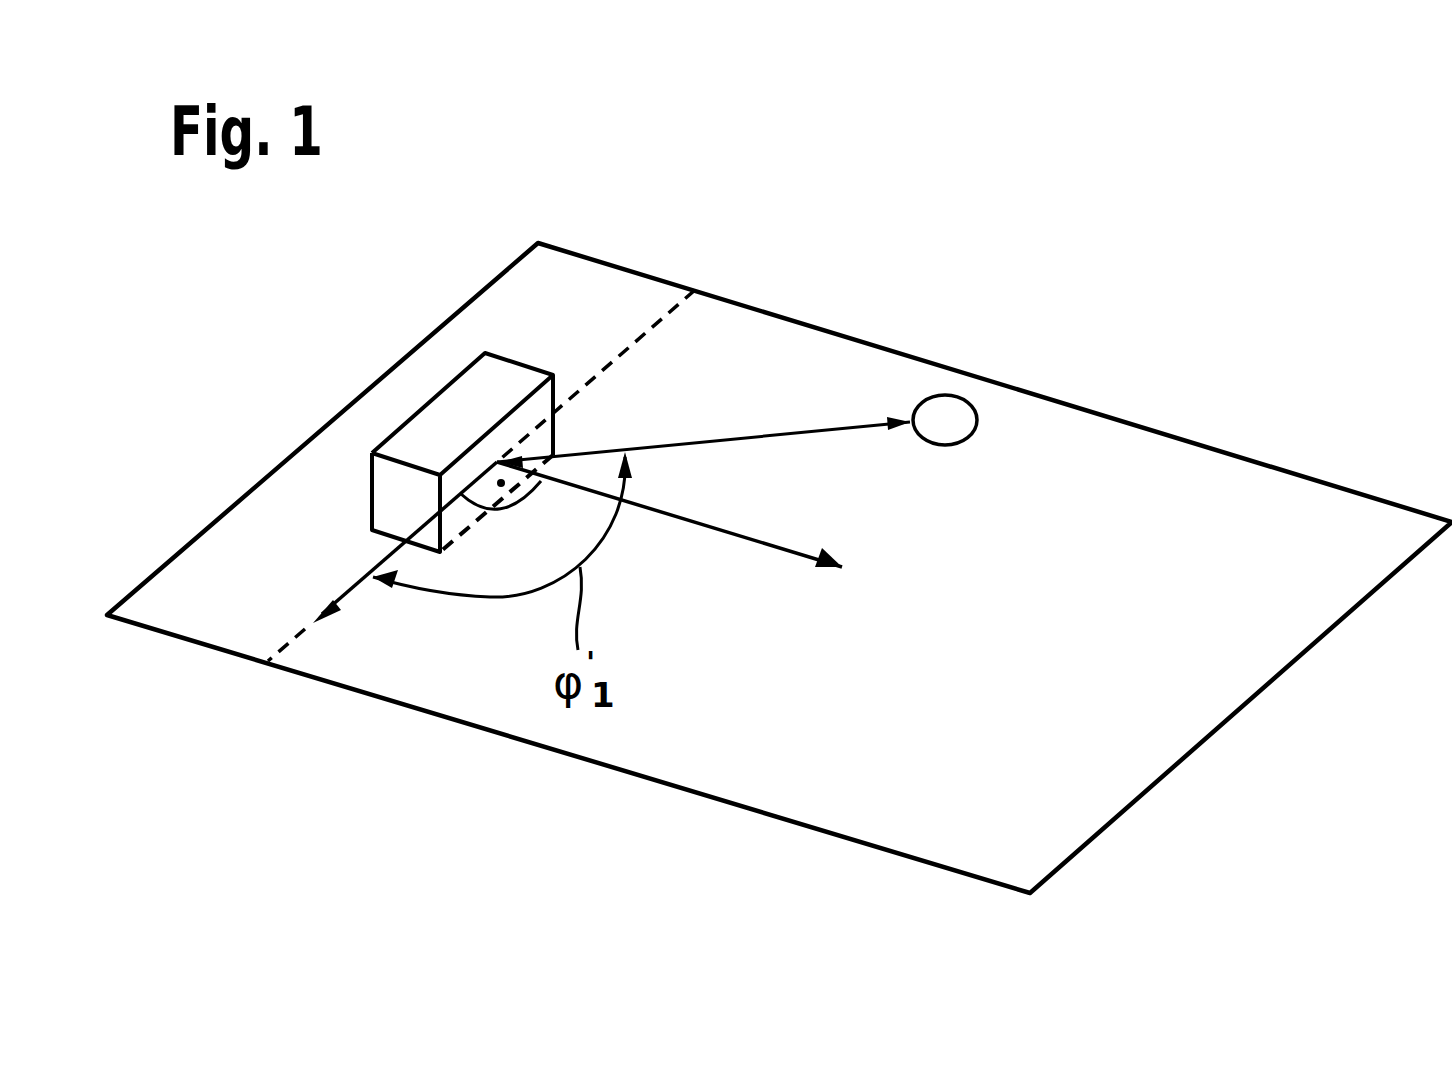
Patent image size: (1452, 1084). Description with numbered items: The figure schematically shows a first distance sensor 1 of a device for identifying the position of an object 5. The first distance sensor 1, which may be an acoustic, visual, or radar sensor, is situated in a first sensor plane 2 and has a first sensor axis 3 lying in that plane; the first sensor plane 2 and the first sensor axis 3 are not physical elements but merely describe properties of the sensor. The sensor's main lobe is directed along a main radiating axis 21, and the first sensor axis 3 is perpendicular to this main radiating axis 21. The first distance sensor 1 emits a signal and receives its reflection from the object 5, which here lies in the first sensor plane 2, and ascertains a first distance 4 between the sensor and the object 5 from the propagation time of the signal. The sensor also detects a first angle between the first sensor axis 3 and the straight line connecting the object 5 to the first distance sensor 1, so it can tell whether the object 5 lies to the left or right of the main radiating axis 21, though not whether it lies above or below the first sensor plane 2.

The first distance sensor 1 is at (410, 418).
The first sensor plane 2 is at (1282, 468).
The first sensor axis 3 is at (357, 590).
The first distance 4 is at (833, 432).
The object 5 is at (946, 447).
The main radiating axis 21 is at (756, 545).